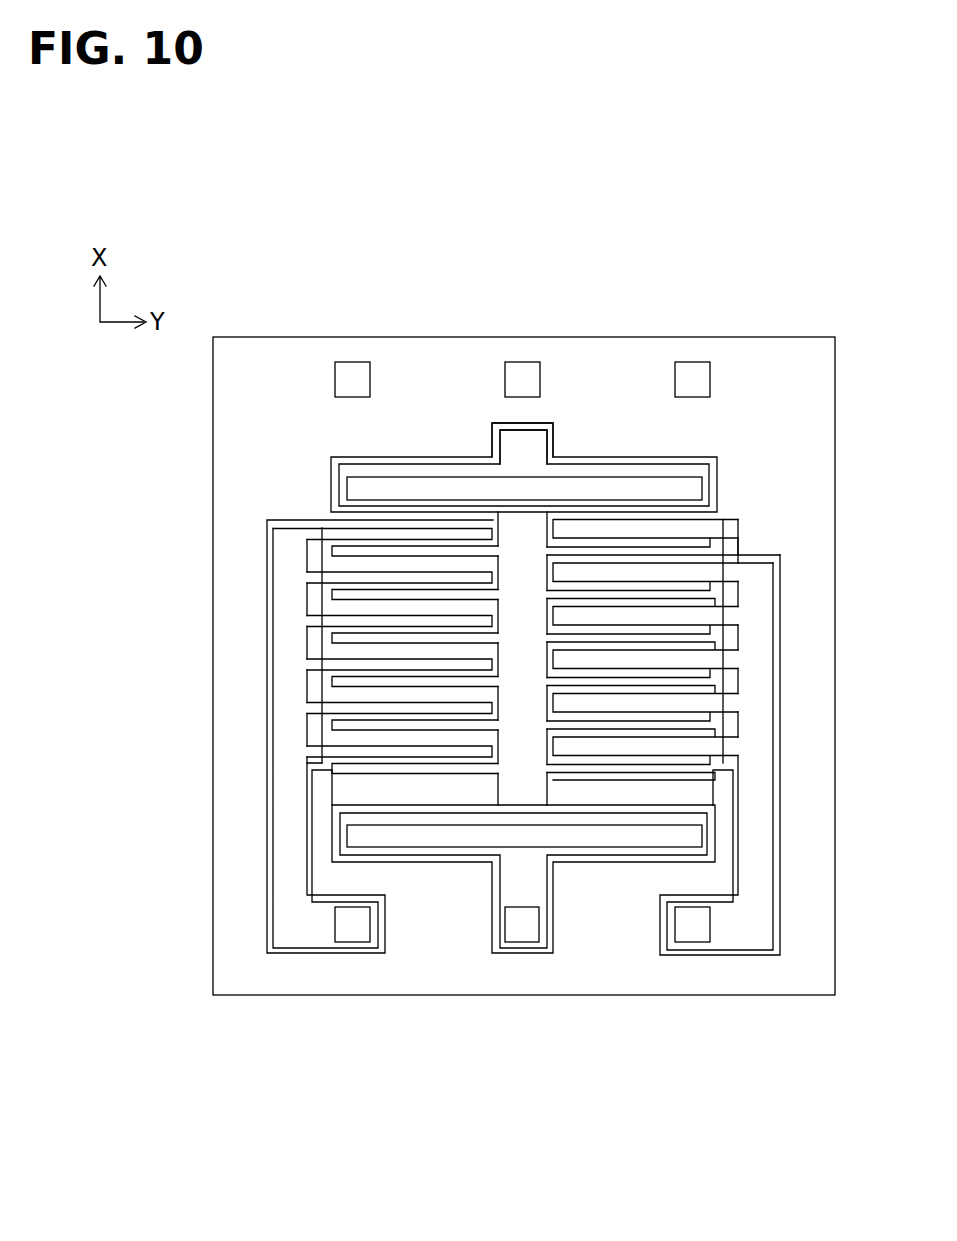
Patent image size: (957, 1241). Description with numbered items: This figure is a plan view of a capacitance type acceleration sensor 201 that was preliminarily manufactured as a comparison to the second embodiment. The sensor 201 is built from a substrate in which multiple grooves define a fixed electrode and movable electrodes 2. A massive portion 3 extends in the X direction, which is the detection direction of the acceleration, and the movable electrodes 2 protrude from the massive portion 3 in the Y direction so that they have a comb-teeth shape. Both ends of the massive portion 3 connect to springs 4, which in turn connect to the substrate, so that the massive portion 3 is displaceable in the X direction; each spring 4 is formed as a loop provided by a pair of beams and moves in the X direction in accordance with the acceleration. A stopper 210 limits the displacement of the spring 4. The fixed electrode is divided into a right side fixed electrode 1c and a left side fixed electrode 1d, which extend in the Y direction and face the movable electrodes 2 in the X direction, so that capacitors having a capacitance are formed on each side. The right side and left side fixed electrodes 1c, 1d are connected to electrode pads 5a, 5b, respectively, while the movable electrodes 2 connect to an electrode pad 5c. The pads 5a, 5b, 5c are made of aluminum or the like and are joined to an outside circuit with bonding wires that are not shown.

The capacitance type acceleration sensor 201 is at (778, 320).
The stopper 210 is at (522, 470).
The spring 4 is at (622, 468).
The massive portion 3 is at (526, 722).
The movable electrode 2 is at (392, 550).
The left side fixed electrode 1d is at (290, 732).
The right side fixed electrode 1c is at (768, 778).
The electrode pad 5a is at (692, 935).
The electrode pad 5b is at (353, 935).
The electrode pad 5c is at (522, 935).